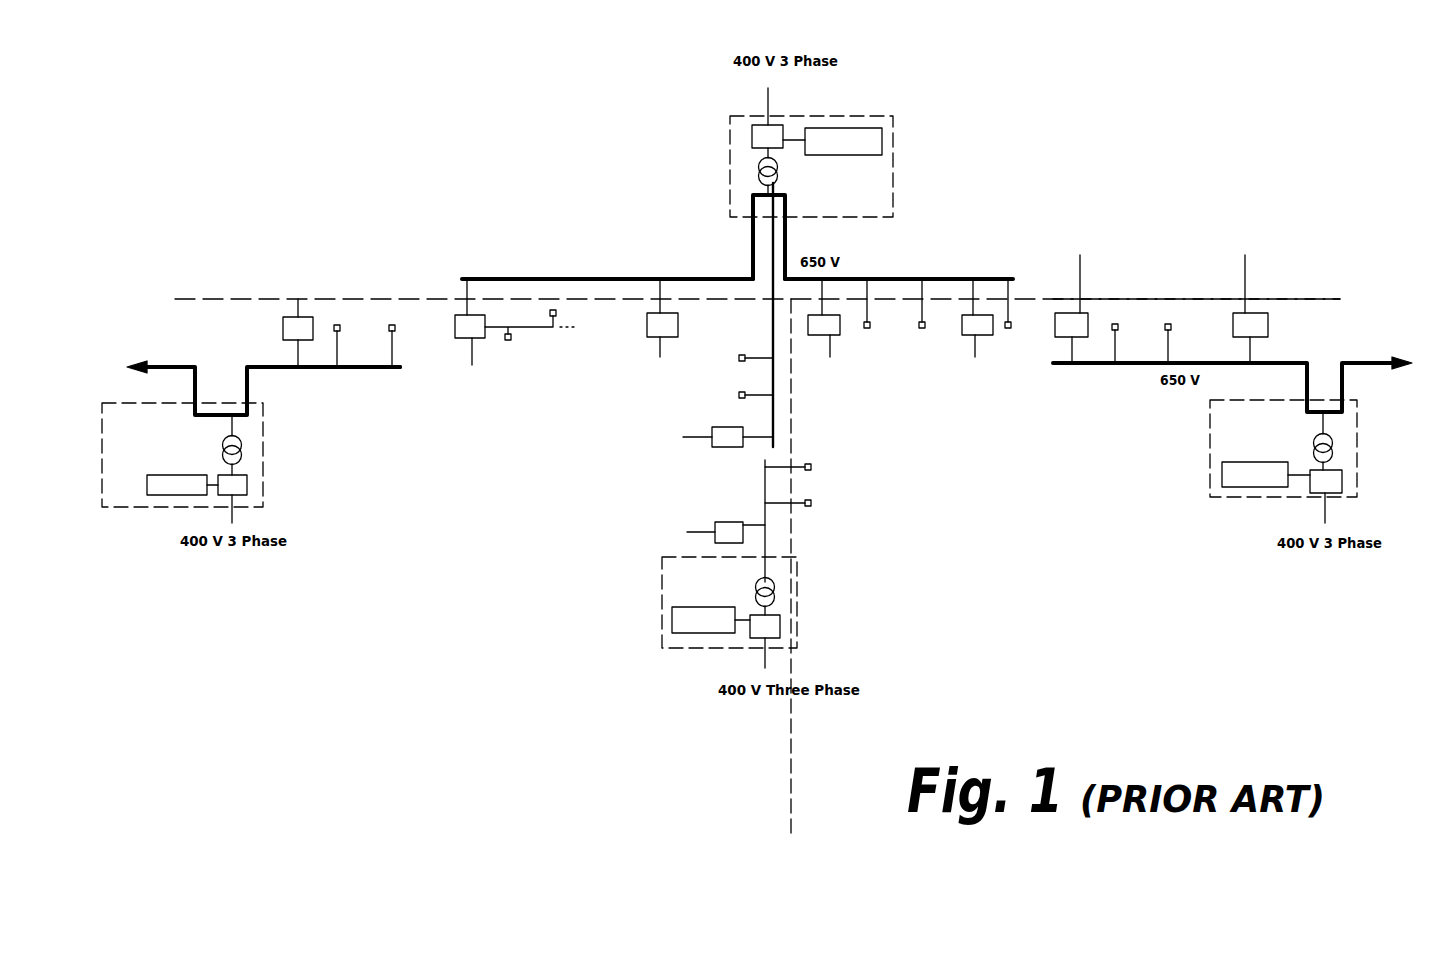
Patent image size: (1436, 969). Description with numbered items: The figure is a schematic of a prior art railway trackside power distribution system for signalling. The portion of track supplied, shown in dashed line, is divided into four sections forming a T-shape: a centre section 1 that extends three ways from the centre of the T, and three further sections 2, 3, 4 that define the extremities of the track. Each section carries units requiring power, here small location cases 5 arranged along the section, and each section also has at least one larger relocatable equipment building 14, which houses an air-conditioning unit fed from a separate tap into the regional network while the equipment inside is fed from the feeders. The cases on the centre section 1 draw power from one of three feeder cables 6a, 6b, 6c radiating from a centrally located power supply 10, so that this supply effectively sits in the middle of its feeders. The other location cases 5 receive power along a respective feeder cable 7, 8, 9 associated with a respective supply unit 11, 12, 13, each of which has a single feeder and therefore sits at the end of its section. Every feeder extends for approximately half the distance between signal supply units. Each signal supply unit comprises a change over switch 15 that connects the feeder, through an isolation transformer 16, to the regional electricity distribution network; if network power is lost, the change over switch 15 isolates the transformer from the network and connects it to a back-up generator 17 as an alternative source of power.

The centre section of track 1 is at (720, 300).
The track section 2 is at (348, 299).
The track section 3 is at (1130, 299).
The track section 4 is at (795, 745).
The location case 5 is at (391, 325).
The feeder cable 6a is at (570, 279).
The feeder cable 6b is at (945, 279).
The feeder cable 6c is at (777, 417).
The feeder cable 7 is at (370, 369).
The feeder cable 8 is at (1088, 365).
The feeder cable 9 is at (765, 478).
The centrally located power supply 10 is at (730, 135).
The supply unit 11 is at (263, 498).
The supply unit 12 is at (1210, 450).
The supply unit 13 is at (798, 605).
The relocatable equipment building 14 is at (283, 330).
The change over switch 15 is at (770, 135).
The isolation transformer 16 is at (778, 172).
The back-up generator 17 is at (845, 143).